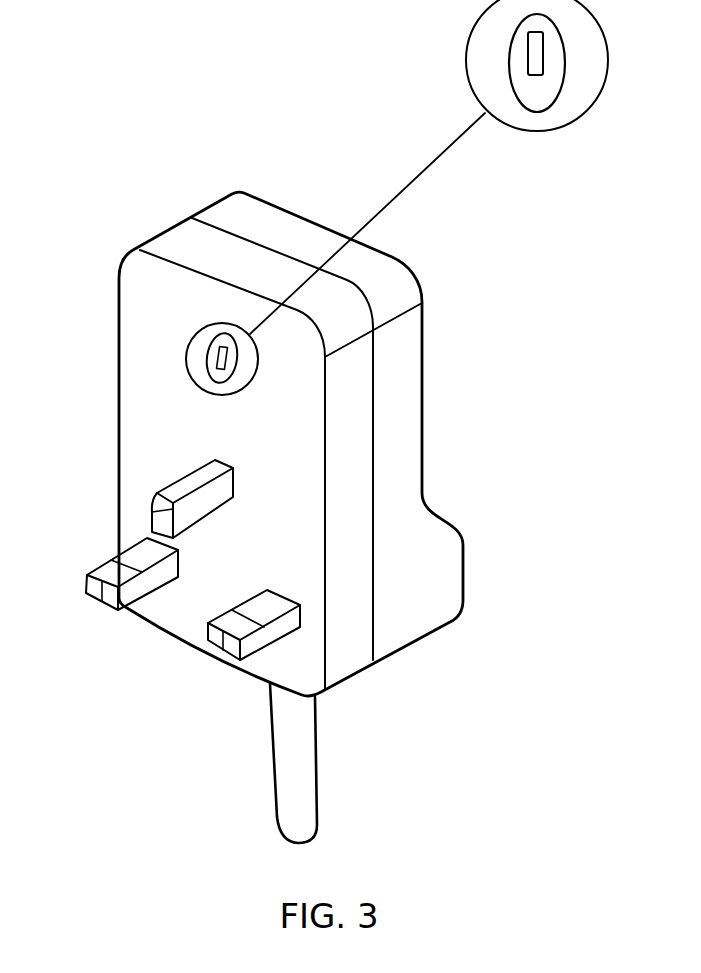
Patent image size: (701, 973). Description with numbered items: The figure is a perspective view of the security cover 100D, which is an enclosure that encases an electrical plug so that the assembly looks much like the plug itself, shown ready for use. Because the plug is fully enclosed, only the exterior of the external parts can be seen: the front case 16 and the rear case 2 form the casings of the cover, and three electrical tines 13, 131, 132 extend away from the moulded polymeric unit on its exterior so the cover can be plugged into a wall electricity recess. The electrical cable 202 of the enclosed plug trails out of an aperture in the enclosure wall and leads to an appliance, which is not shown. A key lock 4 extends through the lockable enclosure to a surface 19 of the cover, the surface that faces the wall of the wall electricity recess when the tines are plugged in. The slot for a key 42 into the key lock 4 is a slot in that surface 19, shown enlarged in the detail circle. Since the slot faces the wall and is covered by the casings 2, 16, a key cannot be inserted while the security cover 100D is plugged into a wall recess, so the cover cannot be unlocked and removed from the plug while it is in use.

The rear case 2 is at (193, 243).
The front case 16 is at (287, 240).
The surface 19 is at (140, 415).
The key lock 4 is at (207, 365).
The slot for a key 42 is at (215, 356).
The electrical tine 132 is at (147, 515).
The electrical tine 131 is at (88, 602).
The electrical tine 13 is at (210, 650).
The electrical cable 202 is at (272, 767).
The security cover 100D is at (517, 392).